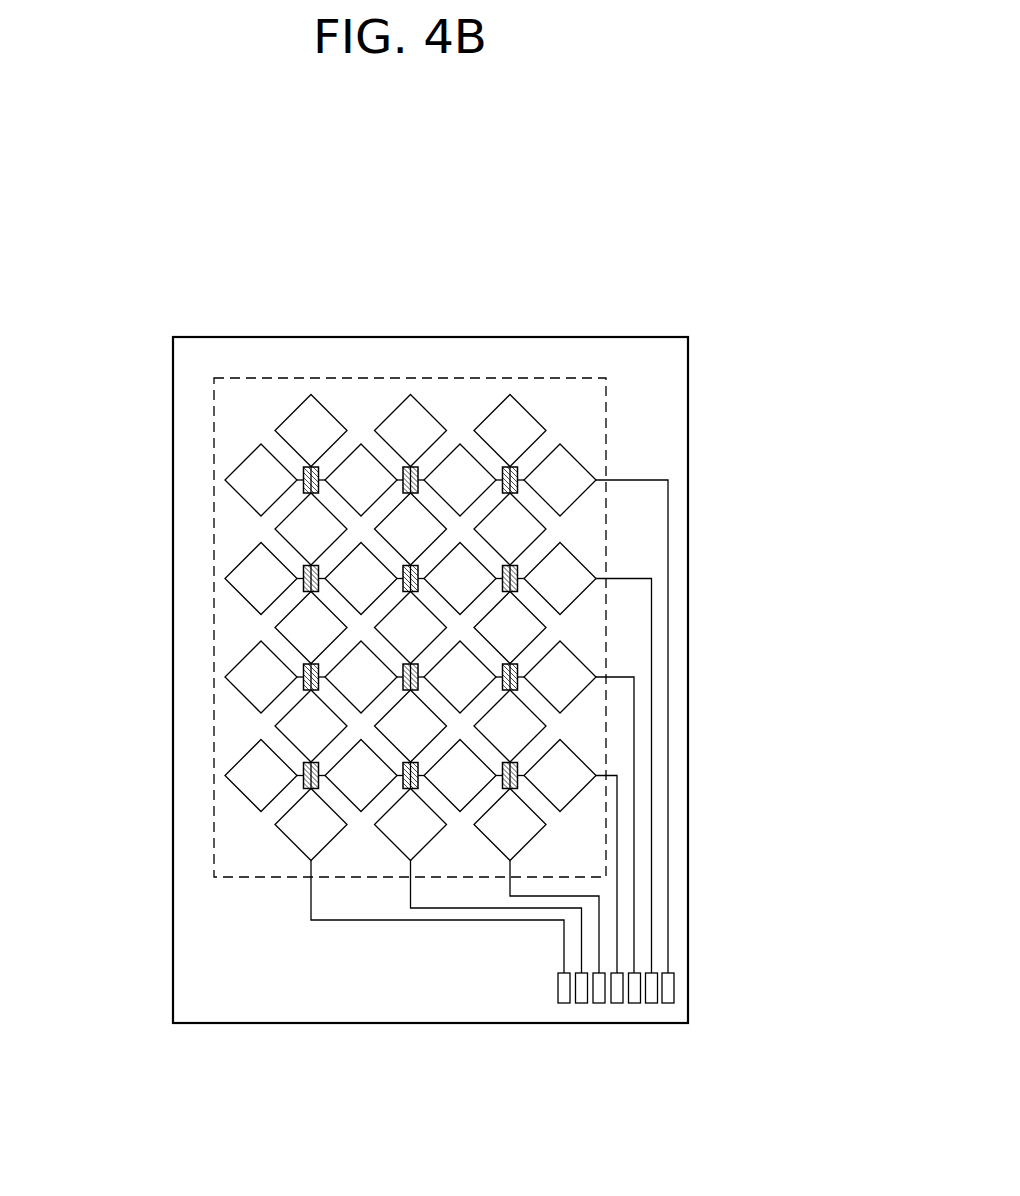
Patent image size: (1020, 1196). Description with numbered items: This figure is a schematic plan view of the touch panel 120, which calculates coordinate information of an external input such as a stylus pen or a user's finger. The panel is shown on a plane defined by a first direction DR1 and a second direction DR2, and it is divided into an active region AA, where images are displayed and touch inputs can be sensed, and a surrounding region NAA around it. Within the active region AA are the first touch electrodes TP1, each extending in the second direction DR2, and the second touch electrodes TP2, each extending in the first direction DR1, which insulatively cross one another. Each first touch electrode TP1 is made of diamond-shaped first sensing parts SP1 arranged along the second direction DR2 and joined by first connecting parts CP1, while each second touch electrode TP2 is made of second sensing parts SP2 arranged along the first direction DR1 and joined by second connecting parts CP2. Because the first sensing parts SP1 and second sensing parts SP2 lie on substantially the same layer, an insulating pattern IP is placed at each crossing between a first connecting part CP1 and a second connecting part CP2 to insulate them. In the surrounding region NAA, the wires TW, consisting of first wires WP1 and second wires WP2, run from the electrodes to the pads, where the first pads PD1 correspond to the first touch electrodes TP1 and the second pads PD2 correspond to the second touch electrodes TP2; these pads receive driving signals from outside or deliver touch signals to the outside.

The touch panel 120 is at (609, 189).
The active region AA is at (606, 267).
The surrounding region NAA is at (120, 1023).
The insulating pattern IP is at (504, 470).
The first sensing part SP1 is at (530, 413).
The first connecting part CP1 is at (518, 474).
The first touch electrode TP1 is at (520, 573).
The second sensing part SP2 is at (578, 497).
The second connecting part CP2 is at (518, 486).
The second touch electrode TP2 is at (520, 628).
The first wire WP1 is at (600, 933).
The second wire WP2 is at (668, 873).
The wire TW is at (560, 726).
The first pad PD1 is at (605, 1027).
The second pad PD2 is at (673, 1027).
The first direction DR1 is at (140, 1147).
The second direction DR2 is at (140, 1147).